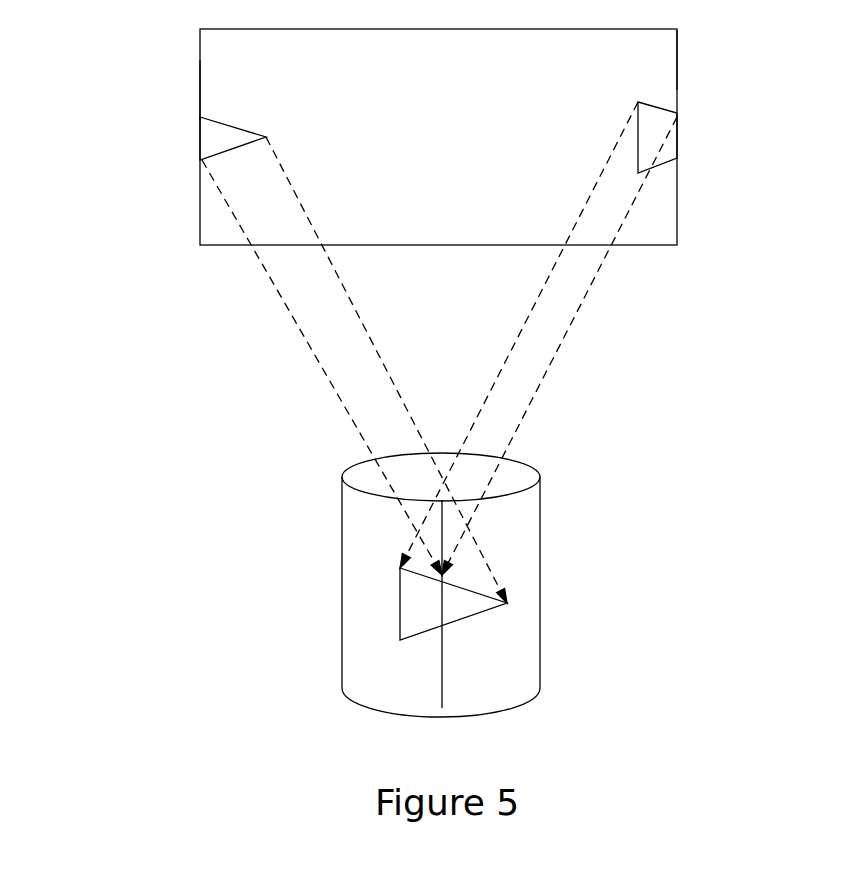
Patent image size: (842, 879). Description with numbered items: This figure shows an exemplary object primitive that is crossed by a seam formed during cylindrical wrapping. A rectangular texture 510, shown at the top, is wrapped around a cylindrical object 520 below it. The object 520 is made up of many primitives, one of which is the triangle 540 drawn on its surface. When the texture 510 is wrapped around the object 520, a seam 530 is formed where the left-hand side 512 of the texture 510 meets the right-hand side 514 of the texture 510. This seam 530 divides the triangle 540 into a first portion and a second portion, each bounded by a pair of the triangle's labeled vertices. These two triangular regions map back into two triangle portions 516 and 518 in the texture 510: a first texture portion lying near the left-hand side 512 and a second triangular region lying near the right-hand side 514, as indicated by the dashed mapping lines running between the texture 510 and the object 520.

The texture 510 is at (653, 59).
The left-hand side of the texture 512 is at (190, 92).
The right-hand side of the texture 514 is at (685, 57).
The triangle portion 516 is at (220, 137).
The triangle portion 518 is at (655, 137).
The object 520 is at (521, 687).
The seam 530 is at (432, 667).
The triangle 540 is at (395, 617).